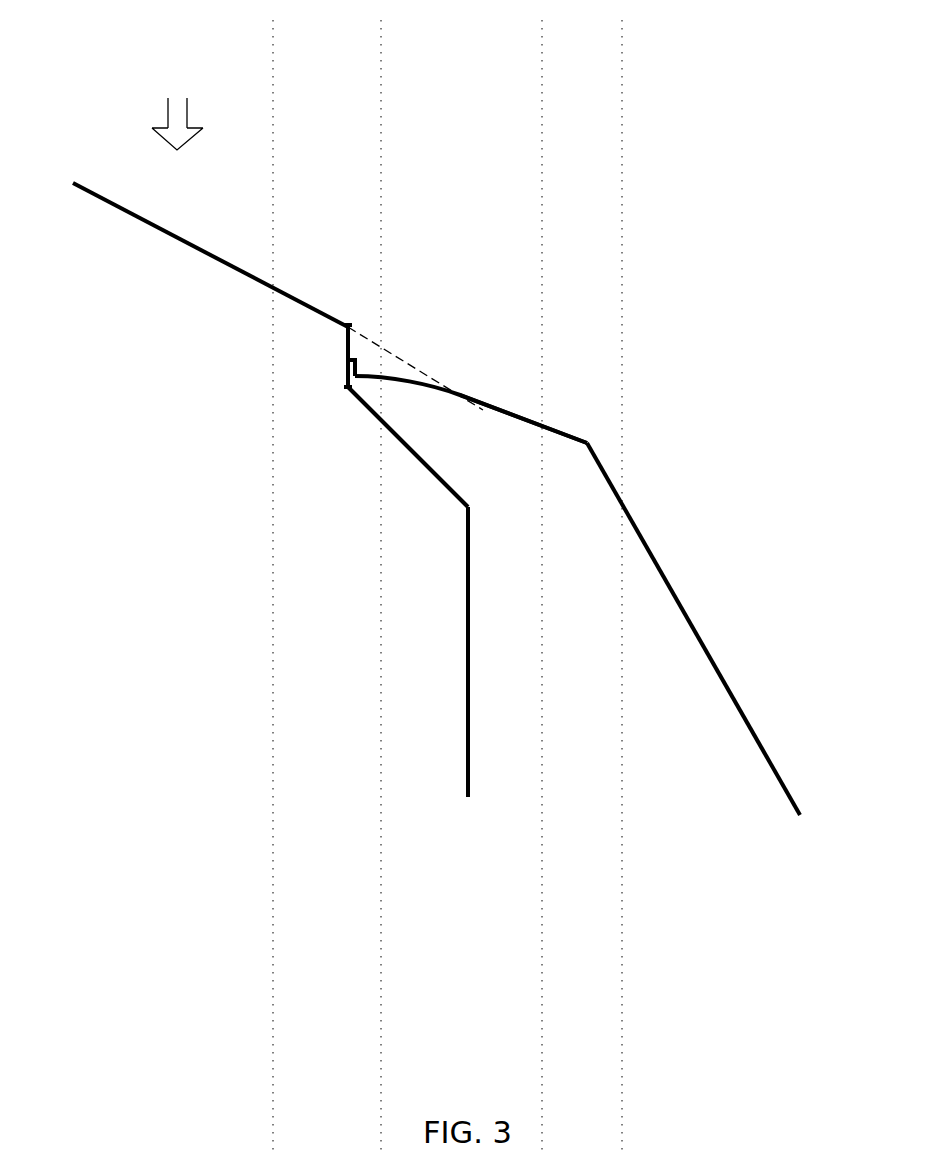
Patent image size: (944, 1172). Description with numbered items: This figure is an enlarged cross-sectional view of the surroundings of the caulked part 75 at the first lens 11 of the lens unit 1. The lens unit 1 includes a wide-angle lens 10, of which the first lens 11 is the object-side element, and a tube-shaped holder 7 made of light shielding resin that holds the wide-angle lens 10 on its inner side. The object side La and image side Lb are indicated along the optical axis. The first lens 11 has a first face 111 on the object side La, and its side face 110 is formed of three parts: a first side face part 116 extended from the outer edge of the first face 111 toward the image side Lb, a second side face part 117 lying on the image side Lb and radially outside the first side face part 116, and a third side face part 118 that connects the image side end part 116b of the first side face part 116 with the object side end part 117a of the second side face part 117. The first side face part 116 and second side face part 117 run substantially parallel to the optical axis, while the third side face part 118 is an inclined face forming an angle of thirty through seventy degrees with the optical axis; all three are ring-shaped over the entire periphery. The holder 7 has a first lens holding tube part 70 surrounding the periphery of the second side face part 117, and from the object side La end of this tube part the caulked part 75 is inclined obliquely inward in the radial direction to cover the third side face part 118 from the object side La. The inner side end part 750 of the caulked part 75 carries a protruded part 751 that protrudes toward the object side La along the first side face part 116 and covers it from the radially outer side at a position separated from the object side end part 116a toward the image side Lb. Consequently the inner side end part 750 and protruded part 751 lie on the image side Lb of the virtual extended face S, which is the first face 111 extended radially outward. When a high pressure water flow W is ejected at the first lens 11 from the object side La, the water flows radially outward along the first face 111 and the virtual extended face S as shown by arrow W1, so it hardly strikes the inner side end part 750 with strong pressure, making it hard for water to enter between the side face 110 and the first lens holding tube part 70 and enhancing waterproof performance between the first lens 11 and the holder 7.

The lens unit 1 is at (401, 133).
The wide-angle lens 10 is at (103, 192).
The first lens 11 is at (140, 253).
The first face 111 is at (200, 240).
The side face 110 is at (617, 275).
The first side face part 116 is at (350, 345).
The object side end part 116a is at (345, 330).
The image side end part 116b is at (348, 388).
The third side face part 118 is at (383, 417).
The second side face part 117 is at (472, 550).
The object side end part 117a is at (466, 508).
The caulked part 75 is at (418, 432).
The inner side end part 750 is at (353, 362).
The protruded part 751 is at (304, 384).
The holder 7 is at (766, 739).
The first lens holding tube part 70 is at (693, 692).
The object side La is at (258, 55).
The image side Lb is at (258, 870).
The high pressure water flow W is at (185, 124).
The arrow W1 is at (358, 311).
The virtual extended face S is at (412, 362).